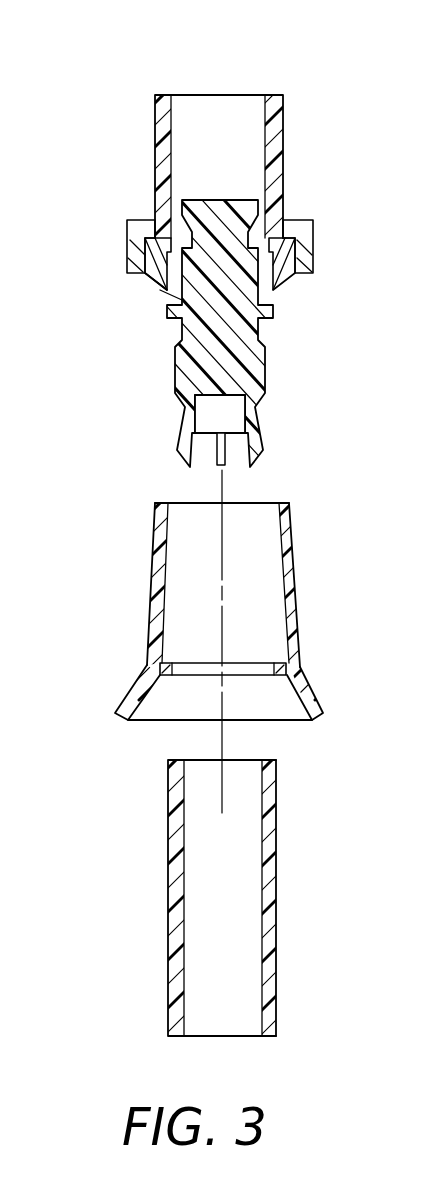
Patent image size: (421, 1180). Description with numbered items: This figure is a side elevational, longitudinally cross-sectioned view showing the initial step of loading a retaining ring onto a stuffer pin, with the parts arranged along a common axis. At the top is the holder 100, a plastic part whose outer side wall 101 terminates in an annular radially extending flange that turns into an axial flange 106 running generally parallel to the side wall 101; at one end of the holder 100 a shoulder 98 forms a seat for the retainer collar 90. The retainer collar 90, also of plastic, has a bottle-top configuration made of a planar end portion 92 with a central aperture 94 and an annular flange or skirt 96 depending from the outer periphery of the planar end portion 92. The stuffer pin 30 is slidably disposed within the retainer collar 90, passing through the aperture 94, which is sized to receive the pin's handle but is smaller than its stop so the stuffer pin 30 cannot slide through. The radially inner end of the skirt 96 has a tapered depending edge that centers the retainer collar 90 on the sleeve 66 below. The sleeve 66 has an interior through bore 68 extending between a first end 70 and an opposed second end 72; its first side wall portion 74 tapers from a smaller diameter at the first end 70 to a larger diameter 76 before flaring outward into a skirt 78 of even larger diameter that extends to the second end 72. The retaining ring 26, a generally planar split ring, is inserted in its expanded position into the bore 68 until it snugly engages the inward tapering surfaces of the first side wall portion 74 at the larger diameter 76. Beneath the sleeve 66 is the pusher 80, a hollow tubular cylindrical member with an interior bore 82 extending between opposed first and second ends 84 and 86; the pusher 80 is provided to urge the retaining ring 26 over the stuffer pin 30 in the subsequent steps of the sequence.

The holder 100 is at (363, 47).
The side wall 101 is at (160, 108).
The axial flange 106 is at (130, 253).
The planar end portion 92 is at (300, 222).
The shoulder 98 is at (140, 245).
The central aperture 94 is at (253, 235).
The annular flange or skirt 96 is at (145, 283).
The retainer collar 90 is at (147, 298).
The stuffer pin 30 is at (272, 337).
The sleeve 66 is at (317, 608).
The first side wall portion 74 is at (155, 523).
The first end 70 is at (283, 505).
The interior through bore 68 is at (280, 533).
The retaining ring 26 is at (193, 660).
The skirt 78 is at (123, 690).
The larger diameter 76 is at (310, 680).
The second end 72 is at (155, 672).
The pusher 80 is at (160, 865).
The interior bore 82 is at (185, 912).
The first end 84 is at (270, 753).
The second end 86 is at (273, 1037).